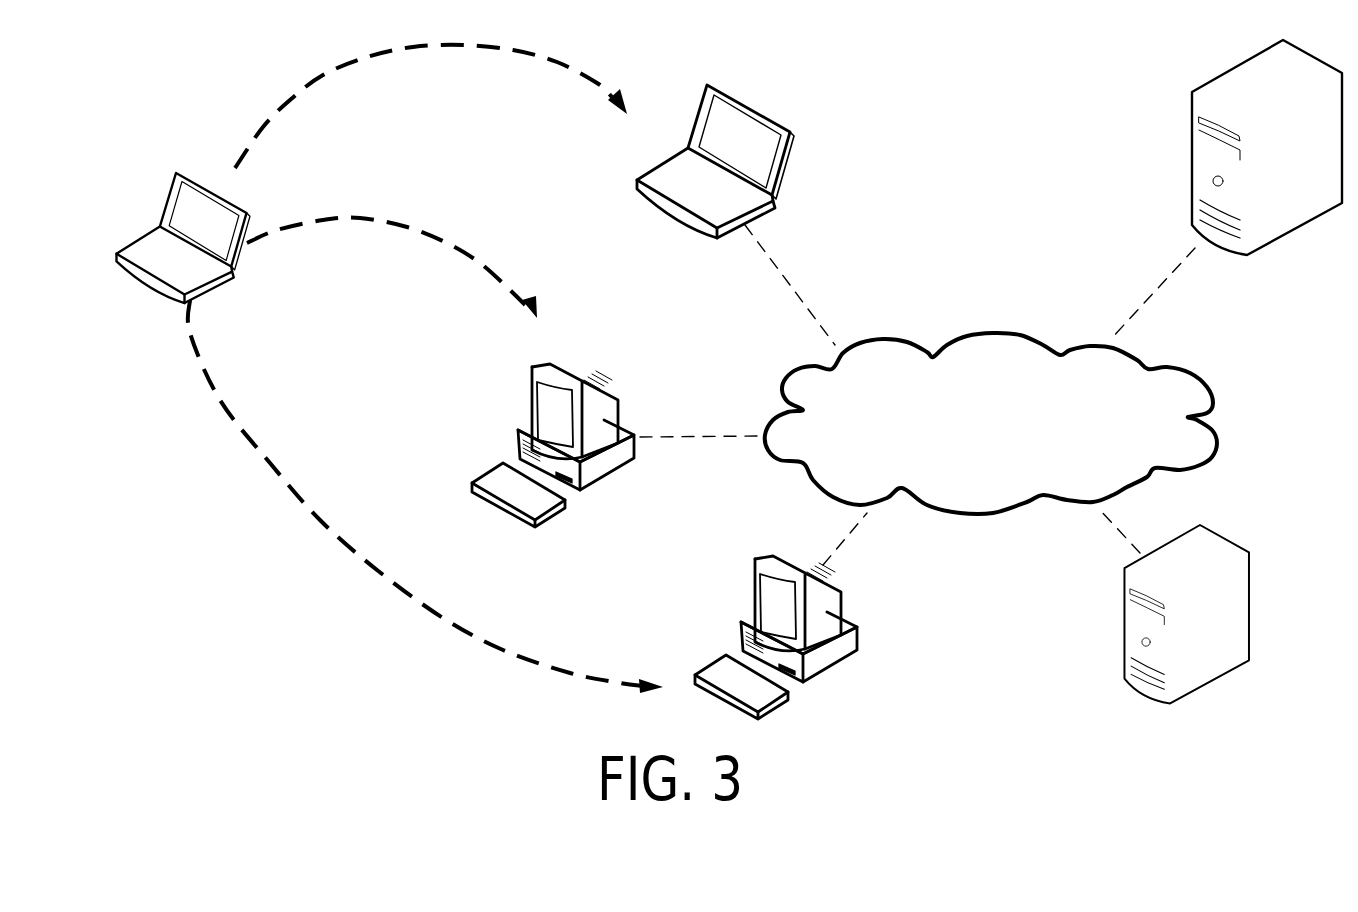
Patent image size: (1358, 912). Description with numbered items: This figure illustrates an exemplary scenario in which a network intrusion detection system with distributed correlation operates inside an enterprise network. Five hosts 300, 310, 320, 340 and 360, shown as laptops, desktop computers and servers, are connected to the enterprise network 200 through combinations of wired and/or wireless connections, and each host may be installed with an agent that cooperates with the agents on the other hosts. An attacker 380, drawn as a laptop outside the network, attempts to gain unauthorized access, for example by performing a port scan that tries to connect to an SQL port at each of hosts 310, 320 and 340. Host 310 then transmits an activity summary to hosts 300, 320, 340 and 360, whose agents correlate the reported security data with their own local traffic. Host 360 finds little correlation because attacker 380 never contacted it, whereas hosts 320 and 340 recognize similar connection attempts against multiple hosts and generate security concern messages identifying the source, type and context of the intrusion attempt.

The enterprise network 200 is at (1016, 436).
The host 300 is at (1188, 170).
The host 310 is at (788, 160).
The host 320 is at (595, 370).
The host 340 is at (850, 667).
The host 360 is at (1233, 670).
The attacker 380 is at (198, 170).